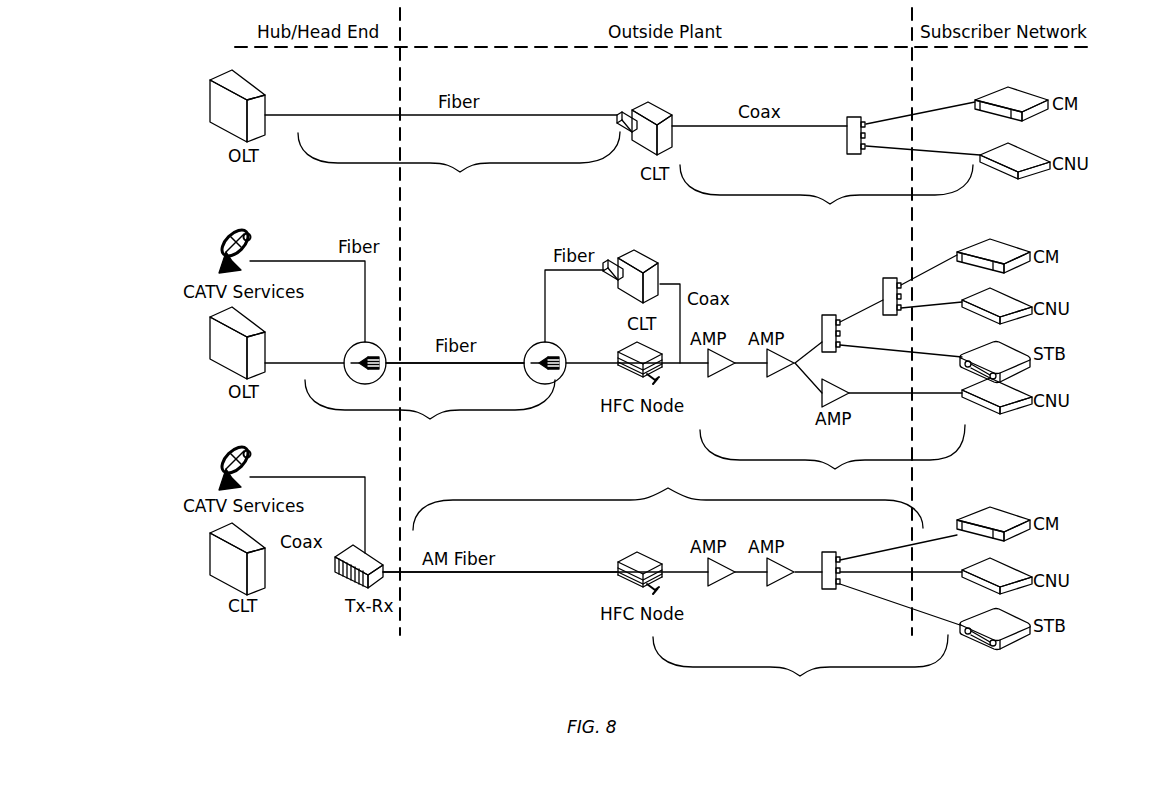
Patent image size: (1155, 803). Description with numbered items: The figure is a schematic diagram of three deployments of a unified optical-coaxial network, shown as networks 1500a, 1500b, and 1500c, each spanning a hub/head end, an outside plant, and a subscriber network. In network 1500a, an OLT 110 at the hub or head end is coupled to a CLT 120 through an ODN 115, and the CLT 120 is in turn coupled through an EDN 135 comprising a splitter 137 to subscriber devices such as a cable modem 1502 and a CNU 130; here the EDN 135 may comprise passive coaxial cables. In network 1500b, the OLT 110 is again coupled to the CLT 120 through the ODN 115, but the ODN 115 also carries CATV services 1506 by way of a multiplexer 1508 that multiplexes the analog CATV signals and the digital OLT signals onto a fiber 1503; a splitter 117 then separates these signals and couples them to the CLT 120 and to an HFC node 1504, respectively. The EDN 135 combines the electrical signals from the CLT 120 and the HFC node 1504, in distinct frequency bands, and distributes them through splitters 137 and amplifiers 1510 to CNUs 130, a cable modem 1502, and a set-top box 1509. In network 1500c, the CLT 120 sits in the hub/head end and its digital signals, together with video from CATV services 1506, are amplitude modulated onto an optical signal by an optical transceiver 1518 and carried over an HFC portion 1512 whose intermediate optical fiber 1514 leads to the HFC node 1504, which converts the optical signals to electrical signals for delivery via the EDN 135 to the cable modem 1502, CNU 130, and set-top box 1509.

The unified optical-coaxial network 1500a is at (226, 54).
The unified optical-coaxial network 1500b is at (226, 212).
The unified optical-coaxial network 1500c is at (226, 426).
The OLT 110 is at (250, 85).
The ODN 115 is at (459, 286).
The CLT 120 is at (638, 104).
The splitter 137 is at (850, 117).
The cable modem 1502 is at (1035, 118).
The CNU 130 is at (1025, 175).
The EDN 135 is at (813, 429).
The CATV services 1506 is at (255, 237).
The multiplexer 1508 is at (357, 345).
The splitter 117 is at (536, 345).
The fiber 1503 is at (432, 366).
The HFC node 1504 is at (624, 348).
The amplifier 1510 is at (722, 378).
The set-top box 1509 is at (1017, 365).
The HFC portion 1512 is at (668, 497).
The optical fiber 1514 is at (527, 570).
The optical transceiver 1518 is at (352, 578).